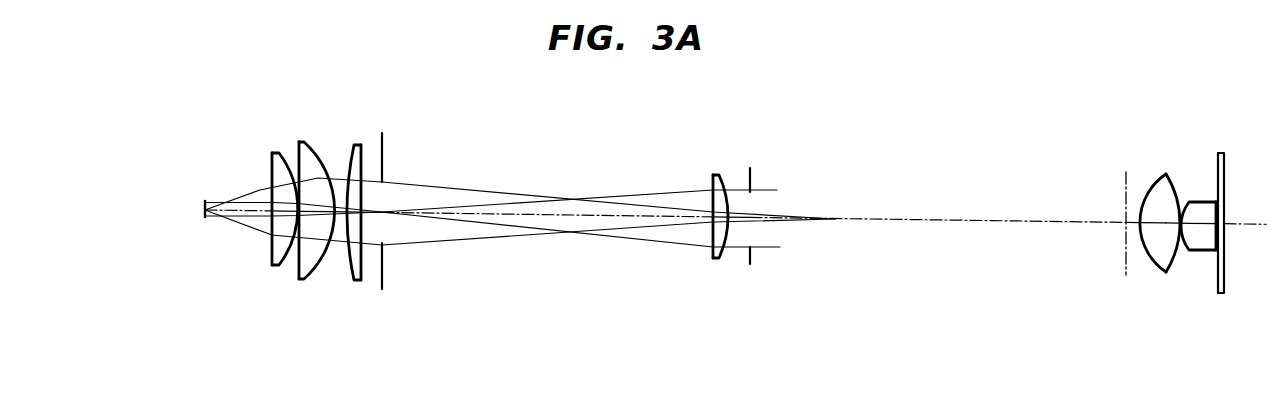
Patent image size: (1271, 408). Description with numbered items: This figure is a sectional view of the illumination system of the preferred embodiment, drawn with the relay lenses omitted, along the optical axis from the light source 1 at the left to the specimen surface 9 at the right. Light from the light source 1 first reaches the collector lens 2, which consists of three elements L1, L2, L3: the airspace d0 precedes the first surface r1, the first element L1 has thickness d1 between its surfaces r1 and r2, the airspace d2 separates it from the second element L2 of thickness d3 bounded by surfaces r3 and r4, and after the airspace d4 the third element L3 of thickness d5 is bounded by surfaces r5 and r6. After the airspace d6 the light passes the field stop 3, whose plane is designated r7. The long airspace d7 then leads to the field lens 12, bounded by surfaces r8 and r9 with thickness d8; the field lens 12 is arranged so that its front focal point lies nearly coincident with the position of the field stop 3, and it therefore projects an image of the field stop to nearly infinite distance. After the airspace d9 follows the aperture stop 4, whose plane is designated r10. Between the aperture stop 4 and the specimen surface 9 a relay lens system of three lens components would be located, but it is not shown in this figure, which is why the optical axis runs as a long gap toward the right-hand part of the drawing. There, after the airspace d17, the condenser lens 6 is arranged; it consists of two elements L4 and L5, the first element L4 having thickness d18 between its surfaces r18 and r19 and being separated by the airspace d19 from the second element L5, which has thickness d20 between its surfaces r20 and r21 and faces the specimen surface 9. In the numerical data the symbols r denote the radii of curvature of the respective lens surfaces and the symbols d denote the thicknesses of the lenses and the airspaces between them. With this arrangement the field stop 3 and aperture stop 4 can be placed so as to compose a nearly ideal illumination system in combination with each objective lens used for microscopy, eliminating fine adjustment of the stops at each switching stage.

The light source 1 is at (205, 214).
The collector lens 2 is at (312, 218).
The field stop 3 is at (400, 235).
The aperture stop 4 is at (768, 238).
The condenser lens 6 is at (1192, 229).
The specimen surface 9 is at (1225, 292).
The field lens 12 is at (705, 242).
The first lens L1 is at (270, 215).
The second lens L2 is at (311, 190).
The third lens L3 is at (358, 199).
The fourth lens L4 is at (1157, 209).
The fifth lens L5 is at (1219, 205).
The airspace d0 is at (242, 207).
The lens thickness d1 is at (287, 178).
The airspace d2 is at (299, 180).
The lens thickness d3 is at (310, 212).
The airspace d4 is at (341, 190).
The lens thickness d5 is at (353, 185).
The airspace d6 is at (375, 208).
The airspace d7 is at (524, 212).
The lens thickness d8 is at (712, 192).
The airspace d9 is at (736, 212).
The airspace d17 is at (1133, 195).
The lens thickness d18 is at (1172, 205).
The airspace d19 is at (1183, 215).
The lens thickness d20 is at (1204, 215).
The radius of curvature of first surface r1 is at (272, 262).
The radius of curvature of second surface r2 is at (284, 264).
The radius of curvature of third surface r3 is at (301, 278).
The radius of curvature of fourth surface r4 is at (314, 277).
The radius of curvature of fifth surface r5 is at (350, 276).
The radius of curvature of sixth surface r6 is at (361, 281).
The field stop surface r7 is at (383, 278).
The radius of curvature of eighth surface r8 is at (712, 252).
The radius of curvature of ninth surface r9 is at (722, 260).
The aperture stop surface r10 is at (751, 262).
The radius of curvature of eighteenth surface r18 is at (1152, 262).
The radius of curvature of nineteenth surface r19 is at (1174, 270).
The radius of curvature of twentieth surface r20 is at (1196, 252).
The radius of curvature of twenty-first surface r21 is at (1224, 252).